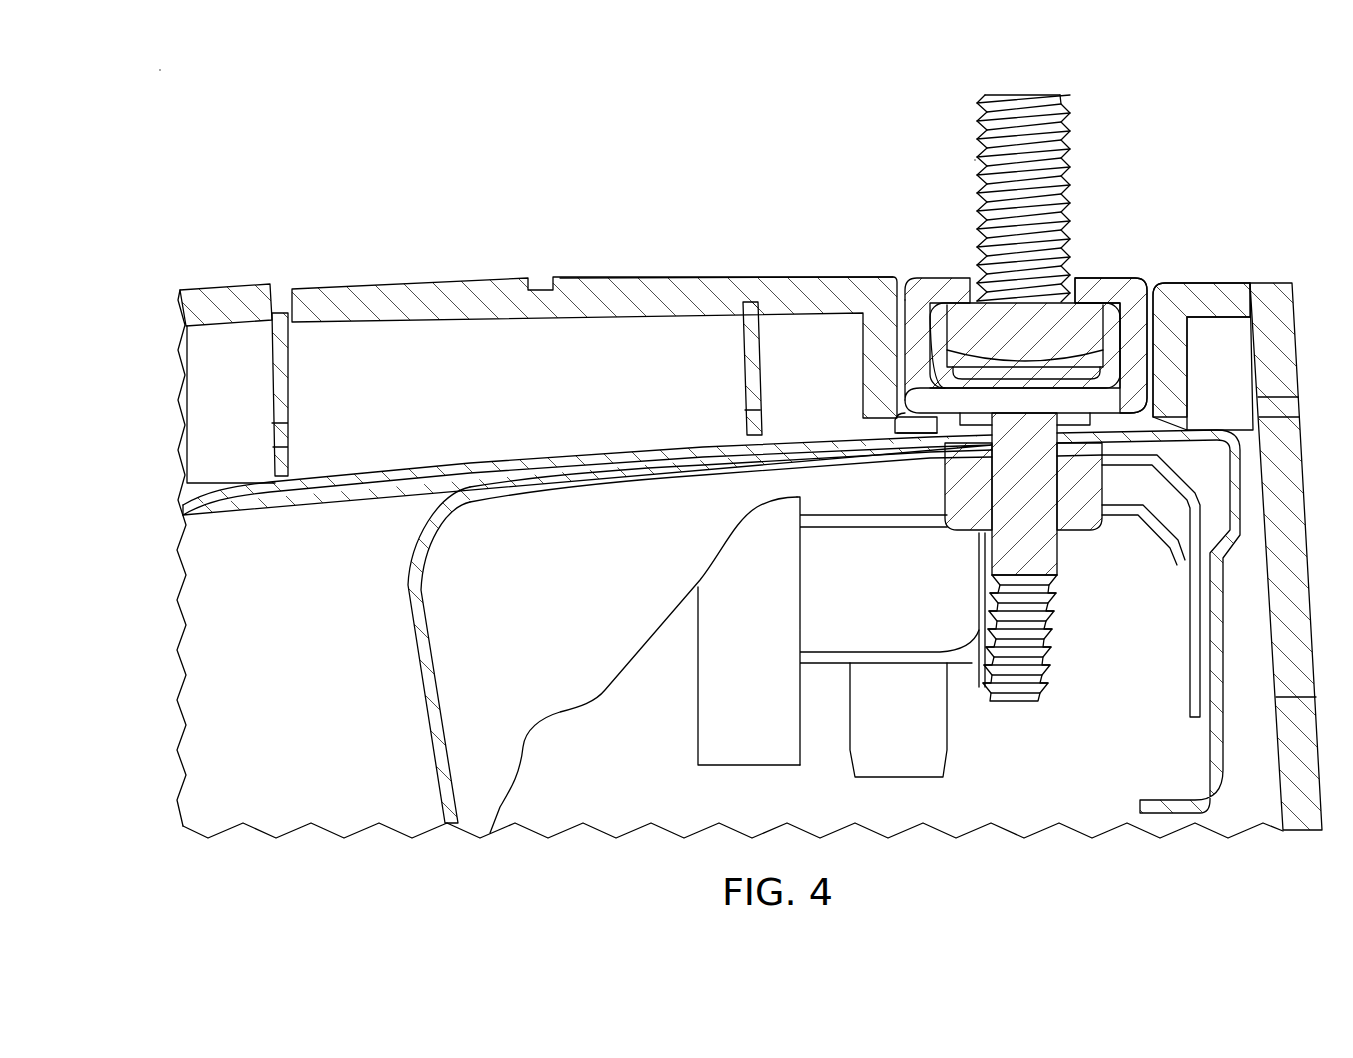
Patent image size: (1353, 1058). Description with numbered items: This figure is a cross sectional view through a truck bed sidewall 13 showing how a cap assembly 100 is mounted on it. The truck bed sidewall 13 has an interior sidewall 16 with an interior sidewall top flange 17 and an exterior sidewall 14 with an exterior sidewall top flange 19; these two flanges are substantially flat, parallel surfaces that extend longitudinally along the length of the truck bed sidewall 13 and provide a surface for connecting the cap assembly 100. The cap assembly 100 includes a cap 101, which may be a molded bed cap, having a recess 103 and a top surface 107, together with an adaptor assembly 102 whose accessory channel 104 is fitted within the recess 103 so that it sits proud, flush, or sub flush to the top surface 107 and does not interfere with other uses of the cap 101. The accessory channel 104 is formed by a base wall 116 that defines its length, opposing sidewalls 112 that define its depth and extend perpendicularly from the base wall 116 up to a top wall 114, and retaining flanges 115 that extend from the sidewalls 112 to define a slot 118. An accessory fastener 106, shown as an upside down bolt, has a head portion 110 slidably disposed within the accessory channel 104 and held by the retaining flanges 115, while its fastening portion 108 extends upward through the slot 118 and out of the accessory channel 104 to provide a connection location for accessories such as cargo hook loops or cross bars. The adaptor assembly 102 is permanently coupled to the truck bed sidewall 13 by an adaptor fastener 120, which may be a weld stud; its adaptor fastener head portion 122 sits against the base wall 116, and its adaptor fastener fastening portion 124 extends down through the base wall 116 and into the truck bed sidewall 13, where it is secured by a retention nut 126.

The cap assembly 100 is at (230, 125).
The cap 101 is at (440, 292).
The adaptor assembly 102 is at (1133, 290).
The recess 103 is at (915, 250).
The accessory channel 104 is at (1135, 250).
The accessory fastener 106 is at (958, 175).
The top surface 107 is at (605, 280).
The fastening portion 108 is at (1023, 176).
The head portion 110 is at (1095, 325).
The sidewalls 112 is at (1135, 375).
The top wall 114 is at (950, 285).
The retaining flanges 115 is at (1100, 285).
The base wall 116 is at (1050, 405).
The slot 118 is at (1020, 275).
The adaptor fastener 120 is at (1047, 560).
The adaptor fastener head portion 122 is at (900, 413).
The adaptor fastener fastening portion 124 is at (995, 560).
The retention nut 126 is at (1100, 490).
The truck bed sidewall 13 is at (165, 585).
The exterior sidewall 14 is at (215, 505).
The interior sidewall 16 is at (448, 775).
The interior sidewall top flange 17 is at (666, 472).
The exterior sidewall top flange 19 is at (515, 462).